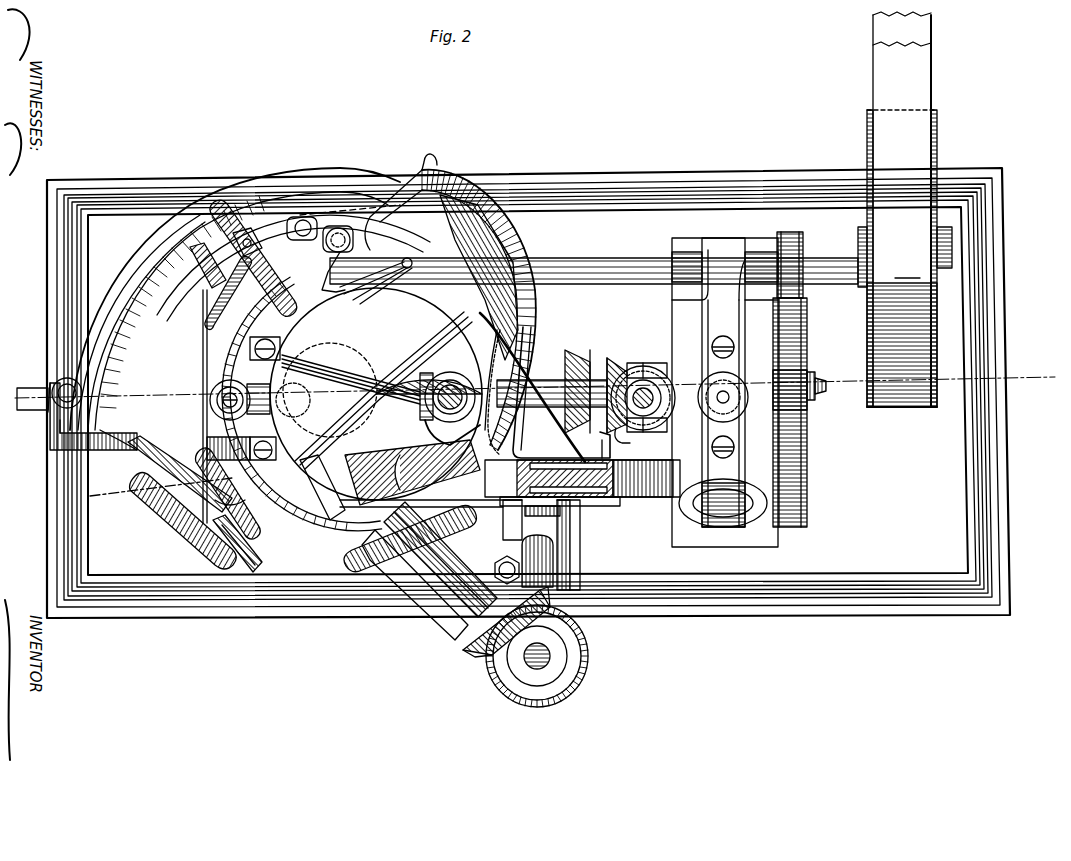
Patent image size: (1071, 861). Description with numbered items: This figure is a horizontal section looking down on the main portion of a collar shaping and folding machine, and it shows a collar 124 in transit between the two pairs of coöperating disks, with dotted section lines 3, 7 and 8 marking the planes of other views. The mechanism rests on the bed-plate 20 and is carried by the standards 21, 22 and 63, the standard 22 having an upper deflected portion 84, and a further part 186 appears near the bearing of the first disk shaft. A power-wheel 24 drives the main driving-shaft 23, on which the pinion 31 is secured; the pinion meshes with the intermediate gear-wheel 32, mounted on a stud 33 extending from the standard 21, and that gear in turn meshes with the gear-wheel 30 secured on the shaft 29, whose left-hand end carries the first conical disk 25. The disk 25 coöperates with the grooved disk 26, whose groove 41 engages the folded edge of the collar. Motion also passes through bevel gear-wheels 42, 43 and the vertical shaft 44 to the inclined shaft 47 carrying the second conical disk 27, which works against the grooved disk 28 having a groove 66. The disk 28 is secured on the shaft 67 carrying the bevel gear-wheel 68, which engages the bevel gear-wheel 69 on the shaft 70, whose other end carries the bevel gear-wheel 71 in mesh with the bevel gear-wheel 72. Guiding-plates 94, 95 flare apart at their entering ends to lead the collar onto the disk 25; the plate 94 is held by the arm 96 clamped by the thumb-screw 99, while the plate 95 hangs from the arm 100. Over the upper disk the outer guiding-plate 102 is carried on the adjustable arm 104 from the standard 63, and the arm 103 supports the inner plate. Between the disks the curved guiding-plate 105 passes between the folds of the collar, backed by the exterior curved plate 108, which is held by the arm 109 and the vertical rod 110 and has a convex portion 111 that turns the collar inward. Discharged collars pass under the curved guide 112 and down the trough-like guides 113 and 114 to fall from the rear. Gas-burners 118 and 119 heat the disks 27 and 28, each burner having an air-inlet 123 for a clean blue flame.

The dotted line 3 3 is at (535, 386).
The dotted line 7 7 is at (163, 495).
The dotted line 8 8 is at (340, 180).
The bed-plate 20 is at (528, 393).
The standard 21 is at (728, 527).
The standard 22 is at (351, 385).
The main driving-shaft 23 is at (612, 258).
The power-wheel 24 is at (937, 140).
The first conical disk 25 is at (243, 406).
The grooved disk 26 is at (275, 470).
The second conical disk 27 is at (376, 394).
The grooved disk 28 is at (372, 572).
The shaft 29 is at (552, 382).
The gear-wheel 30 is at (807, 348).
The pinion 31 is at (803, 242).
The intermediate gear-wheel 32 is at (807, 325).
The stud 33 is at (826, 392).
The groove 41 is at (233, 500).
The bevel gear-wheel 42 is at (612, 358).
The bevel gear-wheel 43 is at (660, 420).
The vertical shaft 44 is at (672, 370).
The shaft 47 is at (425, 397).
The standard 63 is at (613, 497).
The groove 66 is at (370, 540).
The shaft 67 is at (496, 562).
The bevel gear-wheel 68 is at (470, 655).
The bevel gear-wheel 69 is at (588, 680).
The shaft 70 is at (560, 565).
The bevel gear-wheel 71 is at (561, 392).
The bevel gear-wheel 72 is at (588, 350).
The upper deflected portion 84 is at (263, 440).
The guiding-plate 94 is at (170, 510).
The guiding-plate 95 is at (250, 530).
The arm 96 is at (32, 388).
The thumb-screw 99 is at (52, 415).
The arm 100 is at (228, 443).
The outer guiding-plate 102 is at (412, 472).
The arm 103 is at (270, 340).
The arm 104 is at (580, 500).
The guiding-plate 105 is at (400, 262).
The exterior curved plate 108 is at (495, 328).
The arm 109 is at (505, 370).
The vertical rod 110 is at (304, 218).
The convex portion 111 is at (380, 255).
The guide 112 is at (150, 455).
The trough-like guide 113 is at (235, 299).
The trough-like guide 114 is at (432, 198).
The gas-burner 118 is at (293, 249).
The gas-burner 119 is at (420, 585).
The air-inlet 123 is at (232, 208).
The collar 124 is at (450, 270).
The hub 186 is at (240, 388).